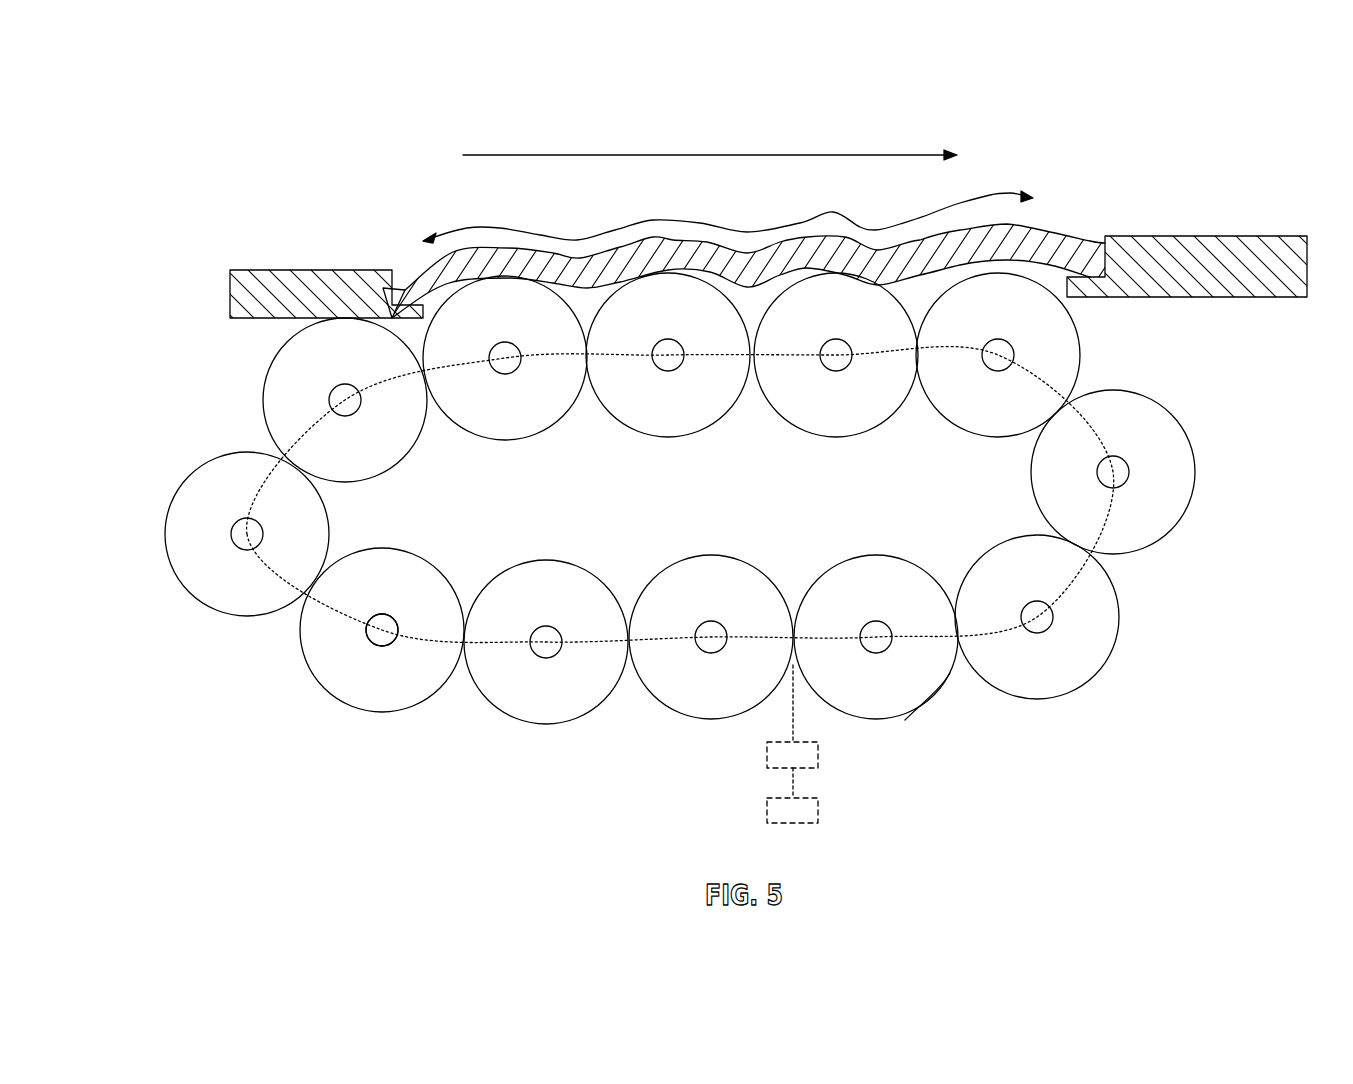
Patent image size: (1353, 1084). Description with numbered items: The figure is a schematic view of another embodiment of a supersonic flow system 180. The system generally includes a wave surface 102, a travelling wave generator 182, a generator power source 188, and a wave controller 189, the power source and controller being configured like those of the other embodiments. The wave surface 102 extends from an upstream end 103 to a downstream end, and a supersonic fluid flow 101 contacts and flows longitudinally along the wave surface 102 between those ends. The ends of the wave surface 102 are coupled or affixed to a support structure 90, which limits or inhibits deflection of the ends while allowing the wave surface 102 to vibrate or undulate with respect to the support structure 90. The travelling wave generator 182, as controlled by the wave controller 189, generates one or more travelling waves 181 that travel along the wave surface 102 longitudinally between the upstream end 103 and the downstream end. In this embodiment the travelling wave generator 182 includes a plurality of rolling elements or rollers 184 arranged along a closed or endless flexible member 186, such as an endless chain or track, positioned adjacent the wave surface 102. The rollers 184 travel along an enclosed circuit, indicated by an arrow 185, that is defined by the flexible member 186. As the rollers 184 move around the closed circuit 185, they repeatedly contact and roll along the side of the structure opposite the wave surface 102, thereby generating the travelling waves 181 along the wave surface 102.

The support structure 90 is at (303, 270).
The supersonic fluid flow 101 is at (503, 154).
The wave surface 102 is at (752, 256).
The upstream end 103 is at (397, 289).
The supersonic flow system 180 is at (178, 140).
The travelling waves 181 is at (580, 238).
The travelling wave generator 182 is at (178, 455).
The rollers 184 is at (400, 432).
The closed circuit 185 is at (387, 632).
The flexible member 186 is at (950, 673).
The generator power source 188 is at (768, 753).
The wave controller 189 is at (768, 803).